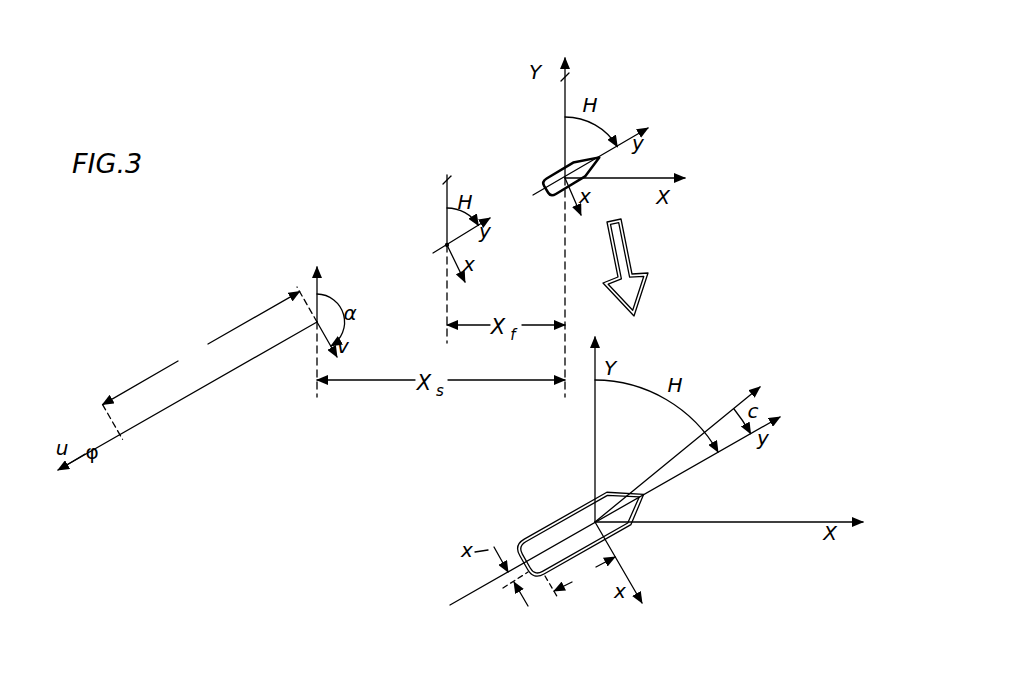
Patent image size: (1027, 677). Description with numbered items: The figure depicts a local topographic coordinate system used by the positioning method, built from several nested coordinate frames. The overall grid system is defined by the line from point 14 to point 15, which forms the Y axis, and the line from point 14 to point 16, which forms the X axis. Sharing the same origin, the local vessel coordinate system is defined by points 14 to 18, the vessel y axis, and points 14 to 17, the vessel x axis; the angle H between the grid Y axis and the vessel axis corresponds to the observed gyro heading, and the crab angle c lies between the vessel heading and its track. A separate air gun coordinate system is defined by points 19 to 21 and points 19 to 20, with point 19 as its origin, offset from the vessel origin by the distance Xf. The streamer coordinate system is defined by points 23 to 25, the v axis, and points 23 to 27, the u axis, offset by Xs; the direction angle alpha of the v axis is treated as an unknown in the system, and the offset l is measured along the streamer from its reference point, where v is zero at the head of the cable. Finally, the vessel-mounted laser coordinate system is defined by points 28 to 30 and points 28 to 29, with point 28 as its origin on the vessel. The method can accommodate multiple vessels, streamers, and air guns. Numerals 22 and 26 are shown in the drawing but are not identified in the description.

The grid system origin point 14 is at (555, 175).
The grid system Y-axis point 15 is at (625, 342).
The grid system X-axis point 16 is at (689, 173).
The vessel coordinate x-axis point 17 is at (586, 212).
The vessel coordinate y-axis point 18 is at (650, 125).
The air gun coordinate origin point 19 is at (446, 245).
The air gun coordinate axis point 20 is at (445, 178).
The air gun coordinate x-axis point 21 is at (466, 284).
The tow point y axis 22 is at (492, 216).
The streamer coordinate origin point 23 is at (275, 300).
The streamer v-axis point 25 is at (339, 357).
The streamer node 26 is at (122, 440).
The streamer u-axis point 27 is at (60, 473).
The vessel-mounted laser coordinate origin point 28 is at (541, 541).
The laser coordinate x-axis point 29 is at (512, 584).
The laser coordinate y-axis point 30 is at (560, 594).